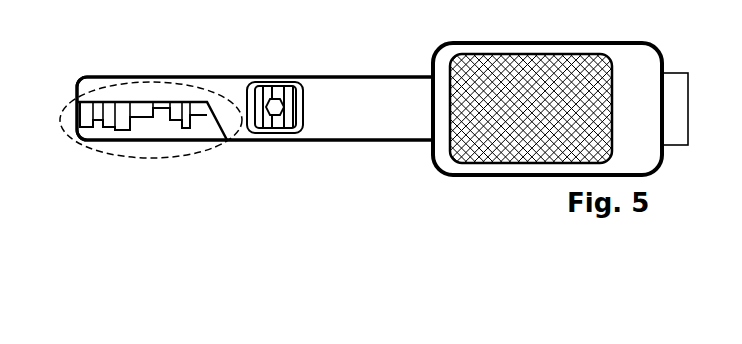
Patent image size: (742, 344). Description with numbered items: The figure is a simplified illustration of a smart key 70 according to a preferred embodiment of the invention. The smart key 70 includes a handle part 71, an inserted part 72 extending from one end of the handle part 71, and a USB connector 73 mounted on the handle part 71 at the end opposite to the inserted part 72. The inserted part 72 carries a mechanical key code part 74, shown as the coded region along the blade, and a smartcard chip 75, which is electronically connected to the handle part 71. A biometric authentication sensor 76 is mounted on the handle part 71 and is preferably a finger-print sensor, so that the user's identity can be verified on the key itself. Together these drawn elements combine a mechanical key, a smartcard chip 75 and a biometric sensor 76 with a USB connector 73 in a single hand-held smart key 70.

The smart key 70 is at (397, 77).
The handle part 71 is at (433, 170).
The inserted part 72 is at (352, 141).
The USB connector 73 is at (688, 146).
The mechanical key code part 74 is at (147, 159).
The smartcard chip 75 is at (282, 133).
The biometric authentication sensor 76 is at (503, 166).